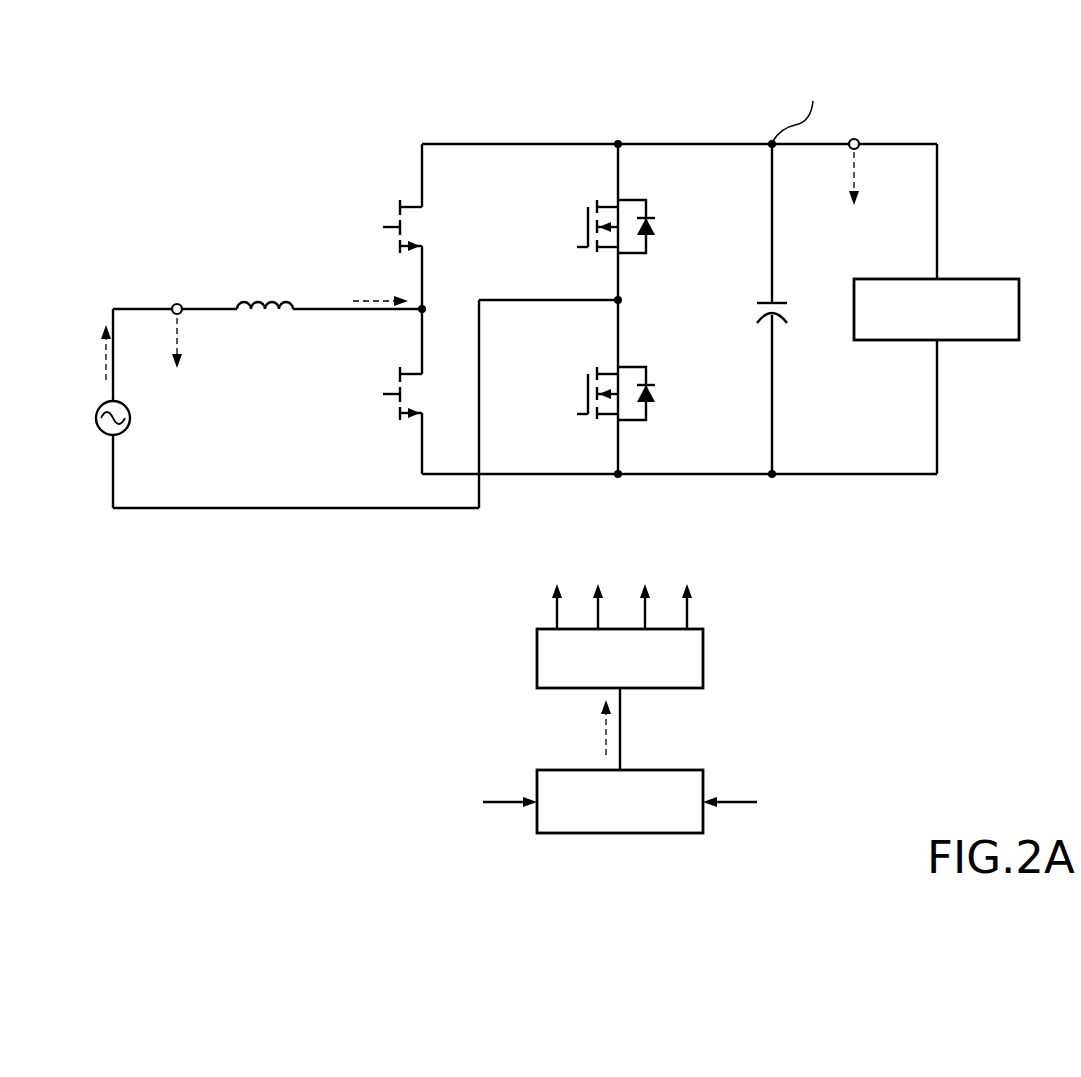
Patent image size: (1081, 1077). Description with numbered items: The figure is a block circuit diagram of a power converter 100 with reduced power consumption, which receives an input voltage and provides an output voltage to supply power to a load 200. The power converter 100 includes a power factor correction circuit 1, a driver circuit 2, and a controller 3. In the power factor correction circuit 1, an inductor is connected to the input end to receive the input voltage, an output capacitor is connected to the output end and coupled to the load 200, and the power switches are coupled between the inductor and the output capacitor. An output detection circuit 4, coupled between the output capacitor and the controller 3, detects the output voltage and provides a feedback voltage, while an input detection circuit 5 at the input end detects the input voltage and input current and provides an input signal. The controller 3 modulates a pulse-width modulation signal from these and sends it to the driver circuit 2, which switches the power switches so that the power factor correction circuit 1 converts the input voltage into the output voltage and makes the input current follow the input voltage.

The power converter 100 is at (218, 153).
The power factor correction circuit 1 is at (774, 510).
The driver circuit 2 is at (695, 661).
The controller 3 is at (683, 782).
The output detection circuit 4 is at (855, 139).
The input detection circuit 5 is at (177, 303).
The load 200 is at (993, 289).